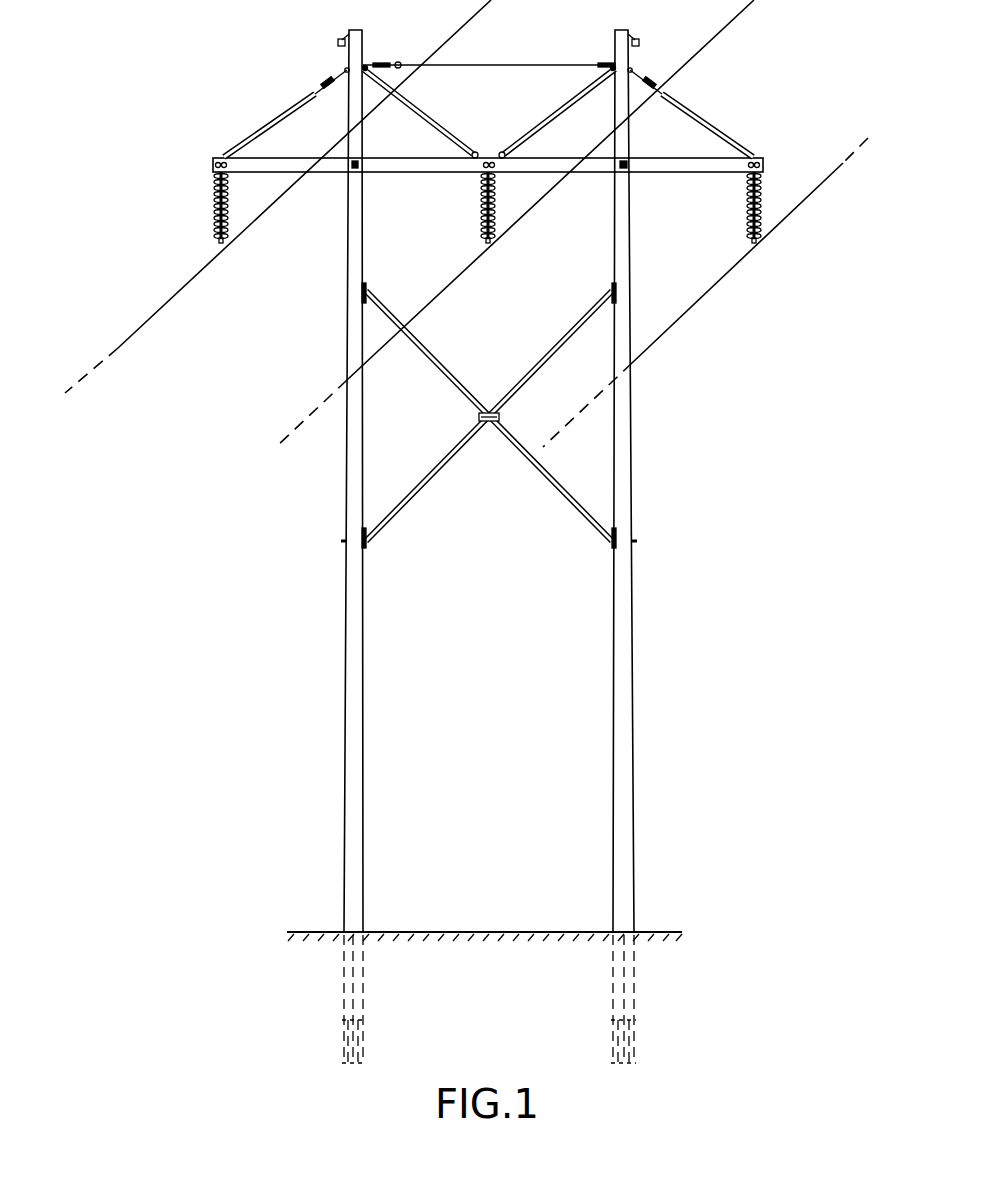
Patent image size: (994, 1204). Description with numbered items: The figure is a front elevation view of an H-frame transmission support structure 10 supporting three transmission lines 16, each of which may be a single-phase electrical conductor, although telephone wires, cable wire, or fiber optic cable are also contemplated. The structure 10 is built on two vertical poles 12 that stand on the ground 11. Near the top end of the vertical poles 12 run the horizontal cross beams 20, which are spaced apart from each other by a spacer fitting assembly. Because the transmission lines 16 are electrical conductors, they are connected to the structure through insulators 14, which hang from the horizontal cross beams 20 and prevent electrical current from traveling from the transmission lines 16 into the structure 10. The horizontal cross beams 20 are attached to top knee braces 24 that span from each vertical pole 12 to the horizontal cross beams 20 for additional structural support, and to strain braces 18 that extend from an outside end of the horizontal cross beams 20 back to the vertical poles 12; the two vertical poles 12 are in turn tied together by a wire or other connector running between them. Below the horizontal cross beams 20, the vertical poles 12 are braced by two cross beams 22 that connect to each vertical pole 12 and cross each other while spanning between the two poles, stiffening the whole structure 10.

The H-frame transmission support structure 10 is at (467, 531).
The ground surface 11 is at (473, 932).
The vertical poles 12 is at (345, 653).
The insulators 14 is at (217, 195).
The transmission lines 16 is at (707, 45).
The strain braces 18 is at (297, 108).
The horizontal cross beams 20 is at (328, 172).
The cross beams 22 is at (518, 377).
The top knee braces 24 is at (427, 112).